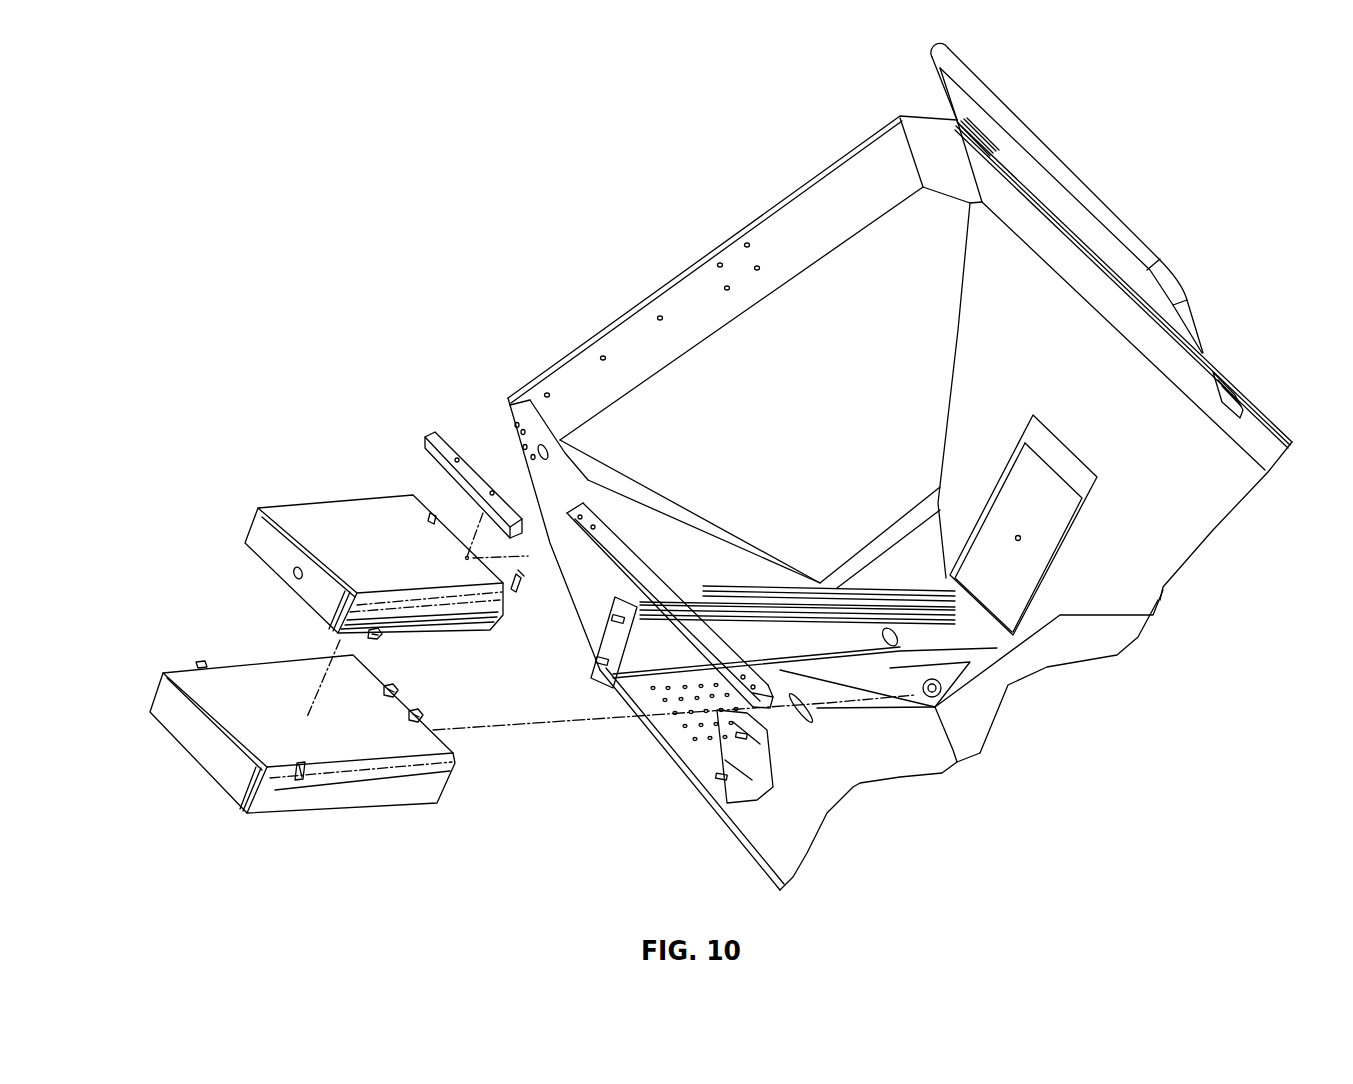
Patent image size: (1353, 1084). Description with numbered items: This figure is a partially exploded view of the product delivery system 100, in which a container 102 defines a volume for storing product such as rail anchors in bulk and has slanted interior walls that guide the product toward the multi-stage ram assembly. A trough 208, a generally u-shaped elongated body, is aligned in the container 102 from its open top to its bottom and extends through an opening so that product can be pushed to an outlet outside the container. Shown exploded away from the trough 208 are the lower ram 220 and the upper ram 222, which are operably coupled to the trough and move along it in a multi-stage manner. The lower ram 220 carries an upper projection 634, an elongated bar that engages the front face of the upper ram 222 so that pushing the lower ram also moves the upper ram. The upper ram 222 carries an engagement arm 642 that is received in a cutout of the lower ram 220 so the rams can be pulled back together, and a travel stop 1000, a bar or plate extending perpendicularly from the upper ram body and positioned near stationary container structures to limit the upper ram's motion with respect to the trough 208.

The product delivery system 100 is at (1094, 79).
The container 102 is at (777, 203).
The trough 208 is at (667, 743).
The lower ram 220 is at (203, 775).
The upper ram 222 is at (307, 499).
The upper projection 634 is at (417, 722).
The engagement arm 642 is at (382, 636).
The travel stop 1000 is at (460, 455).